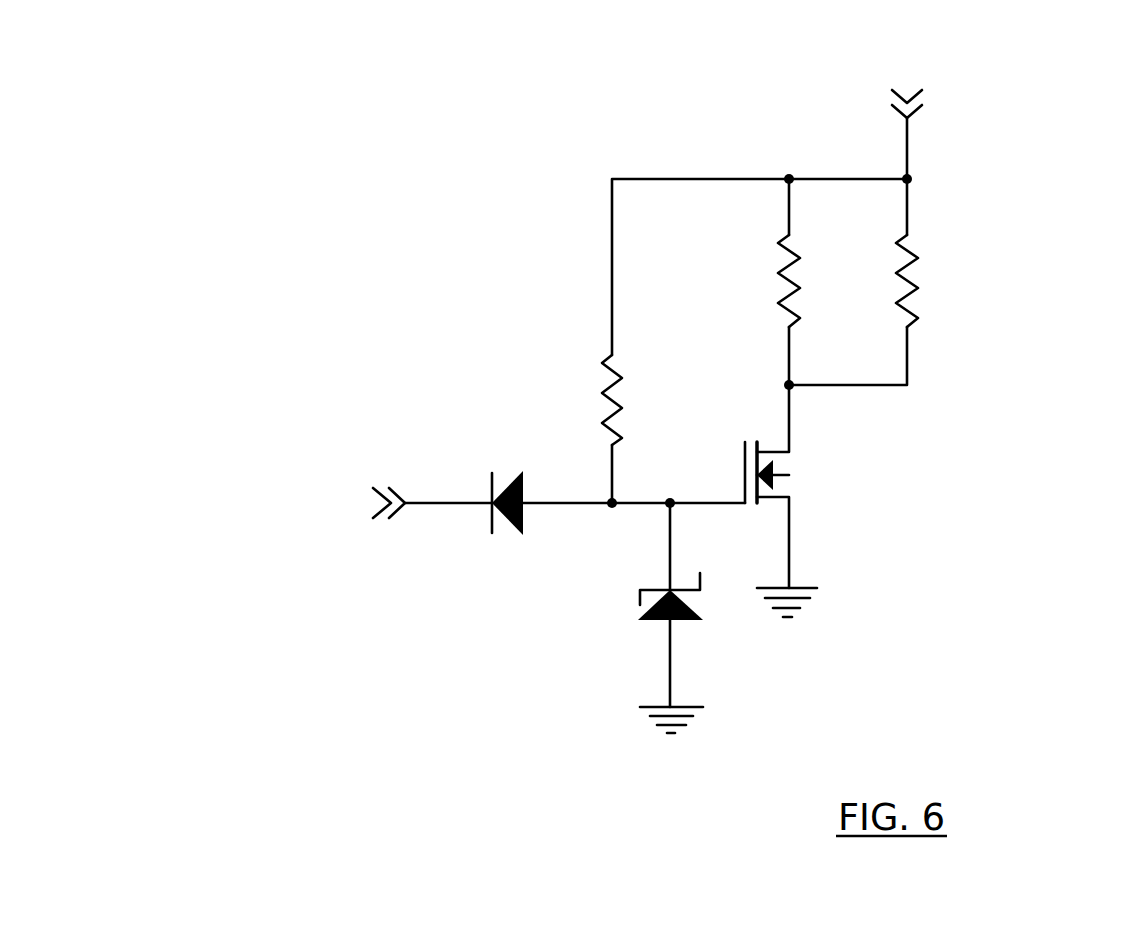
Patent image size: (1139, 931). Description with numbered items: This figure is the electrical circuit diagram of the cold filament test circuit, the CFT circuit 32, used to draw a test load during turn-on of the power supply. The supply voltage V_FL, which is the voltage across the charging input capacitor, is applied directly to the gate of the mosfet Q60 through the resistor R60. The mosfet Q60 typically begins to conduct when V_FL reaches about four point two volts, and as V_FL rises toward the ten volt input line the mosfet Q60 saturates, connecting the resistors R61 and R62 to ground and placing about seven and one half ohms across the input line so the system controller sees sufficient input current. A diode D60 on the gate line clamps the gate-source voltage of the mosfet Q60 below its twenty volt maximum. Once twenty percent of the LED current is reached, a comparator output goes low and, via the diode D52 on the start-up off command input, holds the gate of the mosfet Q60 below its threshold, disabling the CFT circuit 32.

The CFT circuit 32 is at (968, 354).
The resistor R60 is at (646, 429).
The resistor R61 is at (821, 282).
The resistor R62 is at (886, 282).
The mosfet Q60 is at (806, 501).
The diode D52 is at (552, 461).
The diode D60 is at (612, 618).